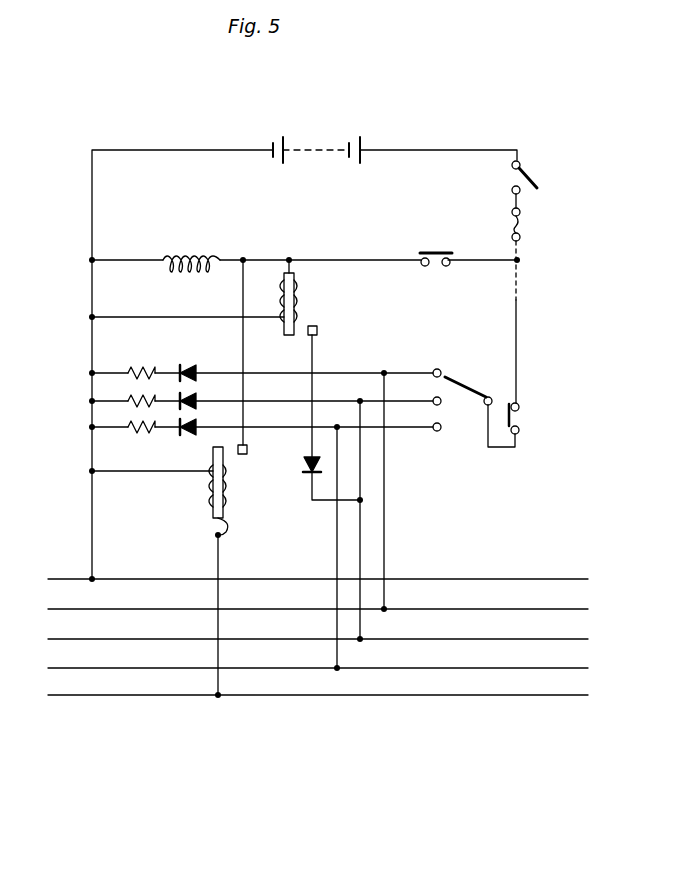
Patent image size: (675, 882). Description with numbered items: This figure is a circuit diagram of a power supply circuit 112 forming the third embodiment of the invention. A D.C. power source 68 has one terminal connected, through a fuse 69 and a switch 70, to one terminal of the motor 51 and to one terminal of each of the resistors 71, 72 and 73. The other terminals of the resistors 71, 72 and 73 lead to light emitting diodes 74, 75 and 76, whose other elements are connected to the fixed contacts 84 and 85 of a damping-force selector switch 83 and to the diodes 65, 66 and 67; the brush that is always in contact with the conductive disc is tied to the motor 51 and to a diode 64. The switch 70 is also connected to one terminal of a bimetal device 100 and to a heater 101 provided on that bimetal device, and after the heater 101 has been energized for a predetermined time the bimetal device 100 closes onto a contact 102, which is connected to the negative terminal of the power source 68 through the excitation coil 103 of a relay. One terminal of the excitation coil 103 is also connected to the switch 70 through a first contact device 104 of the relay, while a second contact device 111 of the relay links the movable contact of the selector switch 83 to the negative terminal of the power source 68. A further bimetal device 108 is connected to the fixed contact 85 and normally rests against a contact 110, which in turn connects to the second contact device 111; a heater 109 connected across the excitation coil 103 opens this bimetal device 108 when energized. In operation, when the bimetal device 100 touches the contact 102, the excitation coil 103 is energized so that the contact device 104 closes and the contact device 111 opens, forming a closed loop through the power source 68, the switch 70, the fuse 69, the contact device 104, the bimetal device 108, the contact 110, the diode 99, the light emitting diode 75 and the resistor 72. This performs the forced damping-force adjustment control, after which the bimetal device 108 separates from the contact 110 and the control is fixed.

The motor 51 is at (318, 579).
The diode 64 is at (317, 695).
The diode 65 is at (317, 609).
The diode 66 is at (317, 639).
The diode 67 is at (317, 668).
The D.C. power source 68 is at (324, 150).
The fuse 69 is at (522, 228).
The switch 70 is at (524, 170).
The resistor 71 is at (150, 372).
The resistor 72 is at (130, 399).
The resistor 73 is at (136, 429).
The light emitting diode 74 is at (194, 372).
The light emitting diode 75 is at (196, 402).
The light emitting diode 76 is at (192, 431).
The damping-force selector switch 83 is at (450, 425).
The fixed contact 84 is at (440, 369).
The fixed contact 85 is at (436, 404).
The diode 99 is at (309, 470).
The bimetal device 100 is at (213, 494).
The heater 101 is at (210, 518).
The contact 102 is at (246, 455).
The excitation coil 103 is at (189, 258).
The first contact device 104 is at (432, 252).
The bimetal device 108 is at (285, 332).
The heater 109 is at (296, 312).
The contact 110 is at (318, 330).
The second contact device 111 is at (528, 420).
The power supply circuit 112 is at (249, 735).